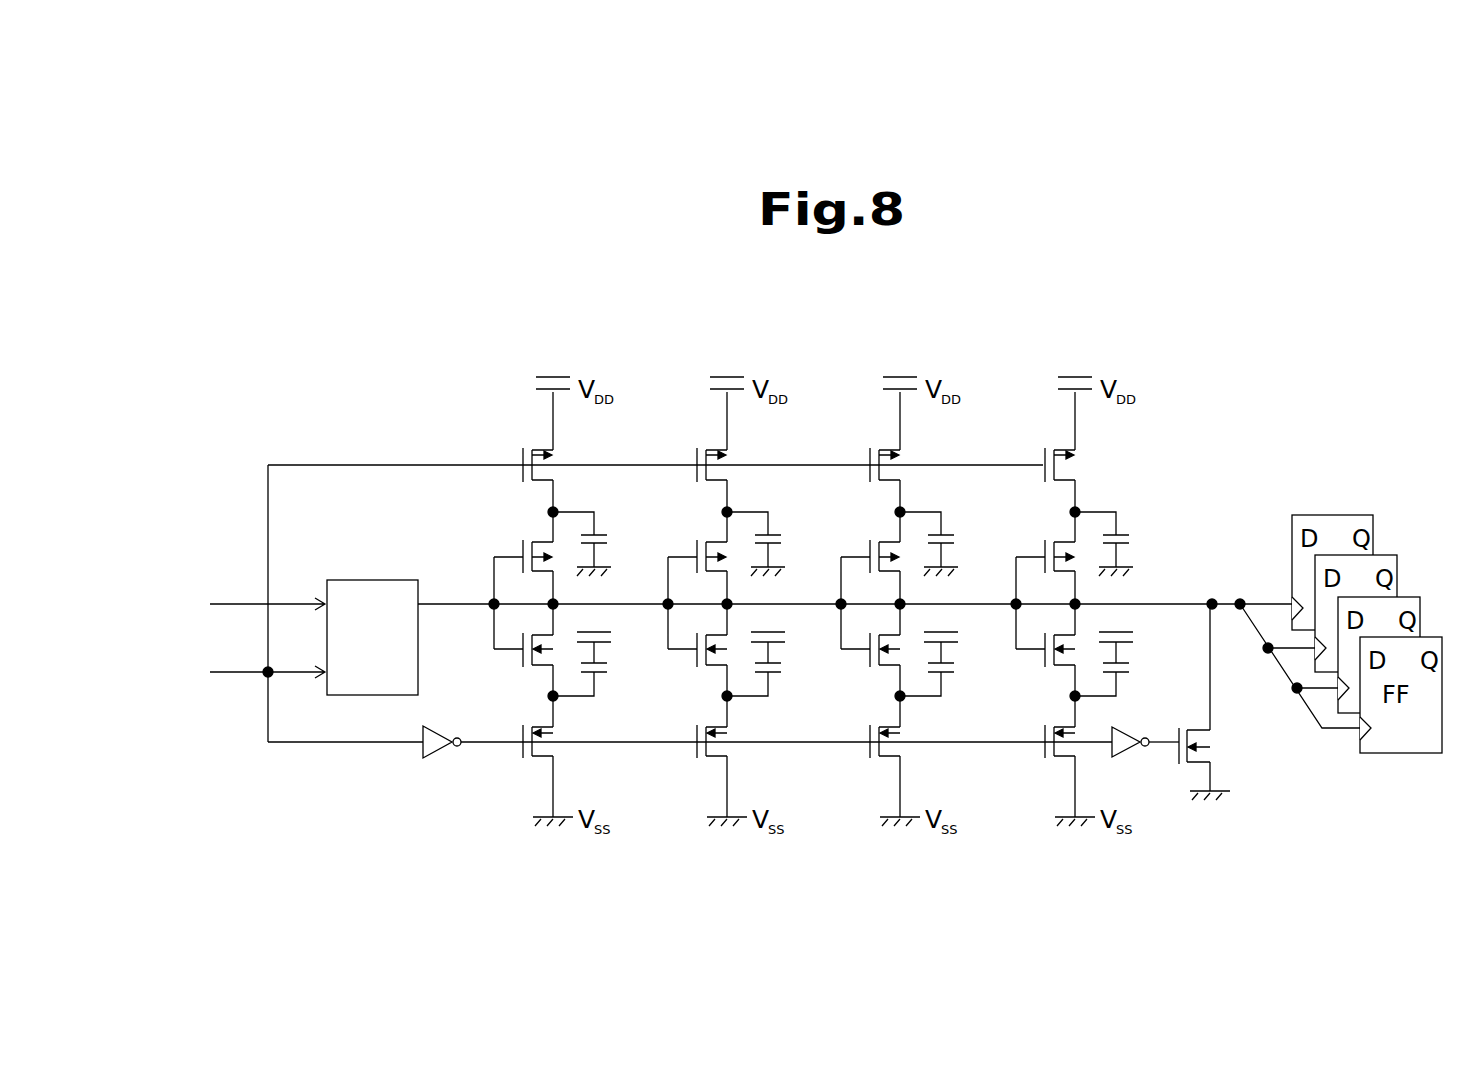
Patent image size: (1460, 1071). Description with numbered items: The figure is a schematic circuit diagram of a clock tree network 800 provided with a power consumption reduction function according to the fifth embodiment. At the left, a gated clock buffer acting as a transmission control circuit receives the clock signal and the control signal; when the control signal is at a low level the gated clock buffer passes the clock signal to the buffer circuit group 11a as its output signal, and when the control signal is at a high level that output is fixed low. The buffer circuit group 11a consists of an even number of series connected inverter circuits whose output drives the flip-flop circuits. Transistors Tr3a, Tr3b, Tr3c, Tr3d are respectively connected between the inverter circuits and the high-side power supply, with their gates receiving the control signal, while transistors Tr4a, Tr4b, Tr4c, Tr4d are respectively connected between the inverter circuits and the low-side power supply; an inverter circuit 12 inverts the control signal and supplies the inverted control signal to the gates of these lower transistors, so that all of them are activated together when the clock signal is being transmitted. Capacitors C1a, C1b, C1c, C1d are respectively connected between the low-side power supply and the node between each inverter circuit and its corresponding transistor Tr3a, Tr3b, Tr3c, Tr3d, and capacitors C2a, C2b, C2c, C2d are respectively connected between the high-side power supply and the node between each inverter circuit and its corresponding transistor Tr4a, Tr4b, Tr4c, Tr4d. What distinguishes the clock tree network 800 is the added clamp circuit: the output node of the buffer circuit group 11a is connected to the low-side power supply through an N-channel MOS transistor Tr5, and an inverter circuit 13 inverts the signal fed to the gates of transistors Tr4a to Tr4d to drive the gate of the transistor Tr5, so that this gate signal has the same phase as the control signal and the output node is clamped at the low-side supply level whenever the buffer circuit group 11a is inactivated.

The clock tree network 800 is at (452, 353).
The buffer circuit group 11a is at (1108, 604).
The inverter circuit 12 is at (437, 758).
The inverter circuit 13 is at (1122, 758).
The transistor Tr3a is at (533, 448).
The transistor Tr3b is at (696, 440).
The transistor Tr3c is at (869, 440).
The transistor Tr3d is at (1044, 440).
The transistor Tr4a is at (543, 757).
The transistor Tr4b is at (745, 755).
The transistor Tr4c is at (918, 755).
The transistor Tr4d is at (1046, 765).
The N-channel MOS transistor Tr5 is at (1203, 763).
The capacitor C1a is at (596, 533).
The capacitor C1b is at (773, 536).
The capacitor C1c is at (946, 536).
The capacitor C1d is at (1138, 549).
The capacitor C2a is at (598, 674).
The capacitor C2b is at (775, 672).
The capacitor C2c is at (948, 672).
The capacitor C2d is at (1123, 673).